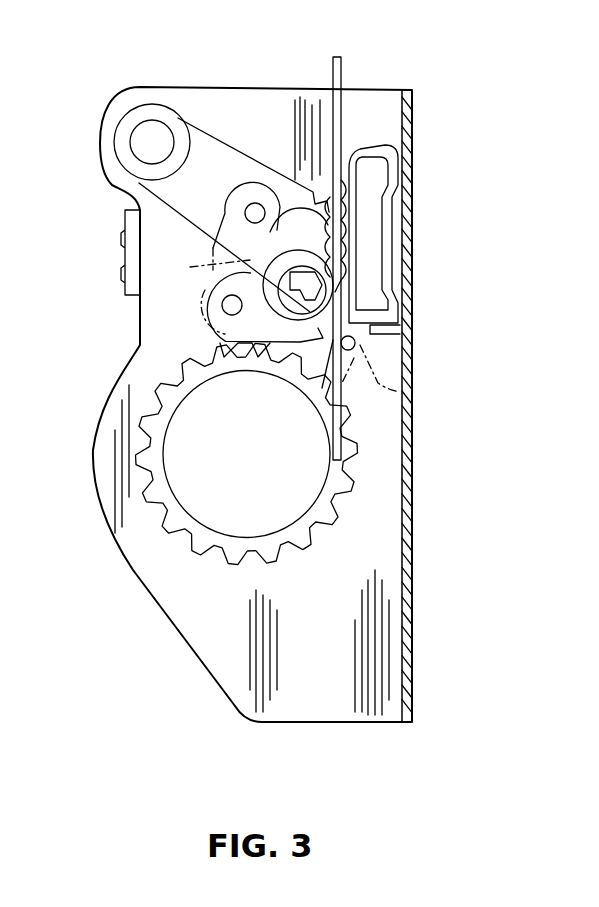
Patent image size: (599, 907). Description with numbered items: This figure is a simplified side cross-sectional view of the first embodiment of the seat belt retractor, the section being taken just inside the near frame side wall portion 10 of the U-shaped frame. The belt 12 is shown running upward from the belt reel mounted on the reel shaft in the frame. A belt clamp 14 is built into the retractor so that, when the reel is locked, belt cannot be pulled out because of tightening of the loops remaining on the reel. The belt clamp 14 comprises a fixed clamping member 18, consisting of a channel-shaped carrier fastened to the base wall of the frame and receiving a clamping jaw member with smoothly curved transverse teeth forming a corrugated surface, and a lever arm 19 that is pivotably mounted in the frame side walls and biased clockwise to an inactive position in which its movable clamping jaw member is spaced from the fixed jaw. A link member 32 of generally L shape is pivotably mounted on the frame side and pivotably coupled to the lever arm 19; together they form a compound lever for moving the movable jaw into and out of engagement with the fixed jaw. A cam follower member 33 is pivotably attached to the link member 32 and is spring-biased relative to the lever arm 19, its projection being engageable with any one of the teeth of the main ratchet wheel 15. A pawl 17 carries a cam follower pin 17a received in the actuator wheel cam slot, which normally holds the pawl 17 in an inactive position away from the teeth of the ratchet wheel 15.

The side wall portion 10 is at (210, 643).
The belt 12 is at (345, 82).
The belt clamp 14 is at (168, 231).
The main ratchet wheel 15 is at (335, 492).
The pawl 17 is at (400, 392).
The cam follower pin 17a is at (355, 347).
The fixed clamping member 18 is at (372, 218).
The lever arm 19 is at (207, 160).
The link member 32 is at (240, 268).
The cam follower member 33 is at (205, 313).